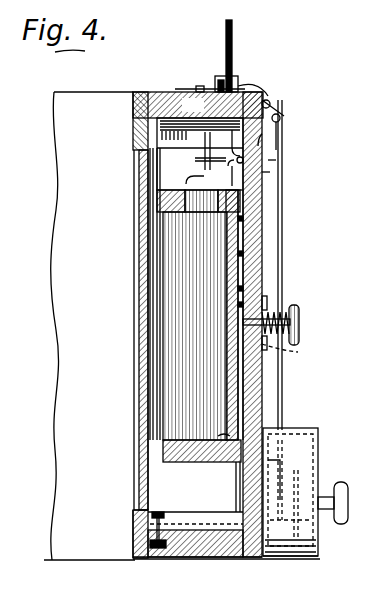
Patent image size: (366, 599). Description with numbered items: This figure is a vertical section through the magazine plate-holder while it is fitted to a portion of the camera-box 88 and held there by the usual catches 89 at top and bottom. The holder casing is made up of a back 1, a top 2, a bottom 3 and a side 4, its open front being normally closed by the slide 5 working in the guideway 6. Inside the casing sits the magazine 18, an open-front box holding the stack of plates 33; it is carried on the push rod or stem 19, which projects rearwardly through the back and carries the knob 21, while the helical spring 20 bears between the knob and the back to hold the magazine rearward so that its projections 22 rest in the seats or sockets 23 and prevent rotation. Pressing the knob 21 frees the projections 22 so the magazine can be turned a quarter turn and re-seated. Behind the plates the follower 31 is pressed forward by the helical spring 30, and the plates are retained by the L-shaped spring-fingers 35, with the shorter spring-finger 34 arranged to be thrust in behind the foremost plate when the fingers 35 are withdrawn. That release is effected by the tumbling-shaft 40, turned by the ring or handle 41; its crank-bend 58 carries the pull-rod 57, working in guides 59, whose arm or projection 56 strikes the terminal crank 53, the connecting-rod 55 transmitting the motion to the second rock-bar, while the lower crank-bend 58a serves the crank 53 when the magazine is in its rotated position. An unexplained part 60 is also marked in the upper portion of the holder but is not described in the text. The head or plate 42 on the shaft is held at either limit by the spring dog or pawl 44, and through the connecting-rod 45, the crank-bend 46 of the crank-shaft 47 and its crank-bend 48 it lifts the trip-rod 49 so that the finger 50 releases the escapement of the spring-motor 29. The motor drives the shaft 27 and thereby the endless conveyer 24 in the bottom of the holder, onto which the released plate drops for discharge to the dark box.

The back 1 is at (253, 250).
The top 2 is at (157, 102).
The bottom 3 is at (212, 558).
The side 4 is at (150, 170).
The slide 5 is at (146, 426).
The guideway 6 is at (134, 508).
The magazine 18 is at (238, 220).
The push rod or stem 19 is at (264, 304).
The helical spring 20 is at (290, 318).
The handle or knob 21 is at (300, 324).
The projections 22 is at (290, 351).
The seats or sockets 23 is at (242, 232).
The endless conveyer 24 is at (160, 514).
The shaft 27 is at (274, 558).
The spring-motor 29 is at (300, 442).
The helical spring 30 is at (283, 262).
The follower 31 is at (250, 202).
The stack of plates 33 is at (196, 350).
The spring-finger 34 is at (158, 338).
The spring-fingers 35 is at (146, 270).
The tumbling-shaft 40 is at (238, 498).
The ring or handle 41 is at (232, 36).
The head or plate 42 is at (214, 80).
The spring dog or pawl 44 is at (200, 88).
The connecting-rod 45 is at (262, 96).
The crank-bend 46 is at (272, 104).
The crank-shaft 47 is at (280, 108).
The crank-bend 48 is at (282, 118).
The trip-rod 49 is at (278, 148).
The finger 50 is at (284, 468).
The terminal crank 53 is at (205, 146).
The connecting-rod 55 is at (200, 180).
The arm or projection 56 is at (225, 158).
The pull-rod 57 is at (268, 162).
The crank-bend 58 is at (262, 140).
The crank-bend 58a is at (222, 464).
The guides 59 is at (262, 176).
The filter 60 is at (193, 105).
The camera-box 88 is at (68, 192).
The catches 89 is at (140, 108).